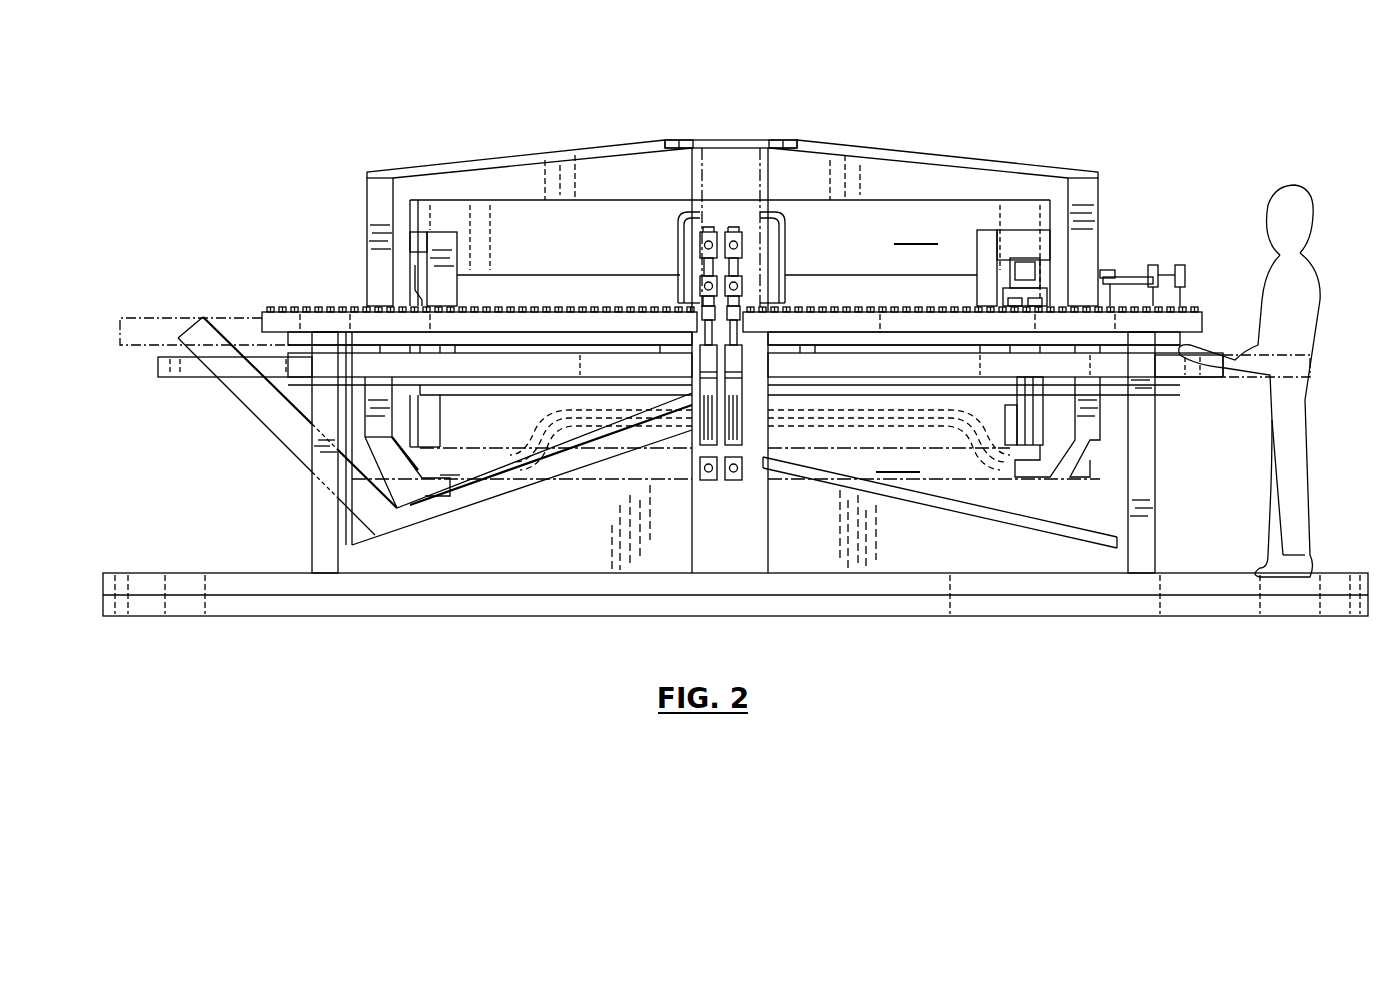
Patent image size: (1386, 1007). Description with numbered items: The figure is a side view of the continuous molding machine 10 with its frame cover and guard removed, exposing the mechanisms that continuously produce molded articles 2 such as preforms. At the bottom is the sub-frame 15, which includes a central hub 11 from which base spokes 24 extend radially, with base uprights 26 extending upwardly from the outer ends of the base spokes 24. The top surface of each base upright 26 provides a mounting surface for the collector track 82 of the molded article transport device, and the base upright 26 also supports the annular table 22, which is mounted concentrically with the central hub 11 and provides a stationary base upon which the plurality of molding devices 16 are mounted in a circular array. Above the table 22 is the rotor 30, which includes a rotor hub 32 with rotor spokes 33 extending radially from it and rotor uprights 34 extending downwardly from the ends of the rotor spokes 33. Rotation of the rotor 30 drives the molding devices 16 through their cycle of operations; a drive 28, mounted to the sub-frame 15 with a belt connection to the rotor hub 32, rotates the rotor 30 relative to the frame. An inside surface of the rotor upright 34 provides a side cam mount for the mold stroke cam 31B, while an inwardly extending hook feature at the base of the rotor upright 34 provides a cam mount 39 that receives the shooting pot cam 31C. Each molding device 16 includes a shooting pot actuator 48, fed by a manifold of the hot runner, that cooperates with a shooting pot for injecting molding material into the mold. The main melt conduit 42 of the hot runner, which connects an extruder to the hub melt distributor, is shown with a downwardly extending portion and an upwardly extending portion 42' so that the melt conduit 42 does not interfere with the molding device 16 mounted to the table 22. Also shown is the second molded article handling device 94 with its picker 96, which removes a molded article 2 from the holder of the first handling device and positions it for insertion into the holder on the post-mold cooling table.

The continuous molding machine 10 is at (992, 65).
The molded articles 2 is at (305, 306).
The central hub 11 is at (683, 450).
The sub-frame 15 is at (880, 542).
The molding devices 16 is at (462, 288).
The annular table 22 is at (508, 370).
The base spokes 24 is at (1050, 540).
The base uprights 26 is at (1155, 455).
The drive 28 is at (792, 247).
The rotor 30 is at (737, 130).
The mold stroke cam 31B is at (730, 253).
The shooting pot cam 31C is at (726, 463).
The rotor hub 32 is at (762, 140).
The rotor spokes 33 is at (890, 172).
The rotor uprights 34 is at (1090, 200).
The cam mount 39 is at (1040, 468).
The main melt conduit 42 is at (283, 414).
The upwardly extending portion 42' is at (522, 470).
The shooting pot actuator 48 is at (1010, 415).
The collector track 82 is at (267, 318).
The second molded article handling device 94 is at (1134, 250).
The picker 96 is at (1185, 268).